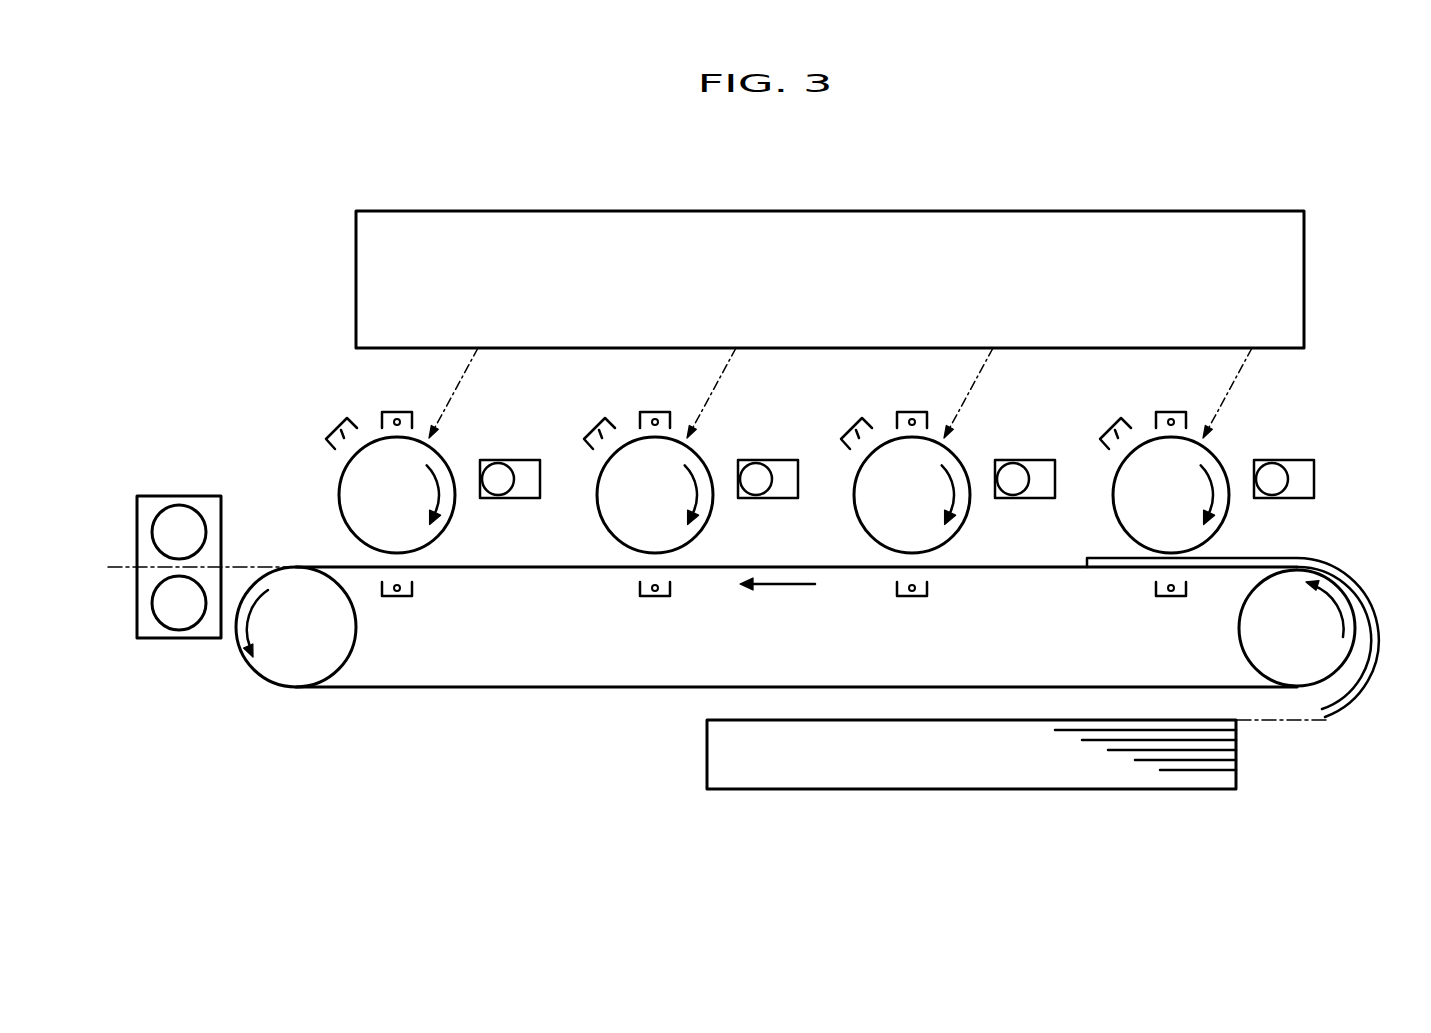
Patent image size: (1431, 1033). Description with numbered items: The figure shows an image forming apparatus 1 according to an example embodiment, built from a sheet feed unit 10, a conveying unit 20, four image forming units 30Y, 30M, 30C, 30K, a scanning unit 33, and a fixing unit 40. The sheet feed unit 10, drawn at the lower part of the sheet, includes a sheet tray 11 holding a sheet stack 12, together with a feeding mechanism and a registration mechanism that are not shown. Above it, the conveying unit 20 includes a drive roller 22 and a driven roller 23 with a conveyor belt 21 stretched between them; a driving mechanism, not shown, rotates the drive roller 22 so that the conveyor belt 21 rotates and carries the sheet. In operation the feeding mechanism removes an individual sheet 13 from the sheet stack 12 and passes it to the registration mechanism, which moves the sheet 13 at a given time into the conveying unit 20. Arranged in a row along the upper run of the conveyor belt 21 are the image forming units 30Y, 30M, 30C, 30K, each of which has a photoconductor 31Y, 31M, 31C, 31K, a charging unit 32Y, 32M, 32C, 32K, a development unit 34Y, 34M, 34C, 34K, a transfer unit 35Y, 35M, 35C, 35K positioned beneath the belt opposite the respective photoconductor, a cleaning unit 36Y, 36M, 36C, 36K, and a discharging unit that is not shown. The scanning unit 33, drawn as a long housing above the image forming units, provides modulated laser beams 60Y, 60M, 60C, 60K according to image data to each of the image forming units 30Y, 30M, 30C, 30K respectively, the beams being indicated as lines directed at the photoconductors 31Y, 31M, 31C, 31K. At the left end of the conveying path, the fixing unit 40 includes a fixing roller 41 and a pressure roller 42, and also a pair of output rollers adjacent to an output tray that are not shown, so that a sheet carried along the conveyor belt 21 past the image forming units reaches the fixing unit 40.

The image forming apparatus 1 is at (1117, 163).
The sheet feed unit 10 is at (931, 785).
The sheet tray 11 is at (907, 792).
The sheet stack 12 is at (1190, 772).
The sheet 13 is at (1378, 607).
The conveying unit 20 is at (779, 661).
The conveyor belt 21 is at (540, 690).
The drive roller 22 is at (1250, 650).
The driven roller 23 is at (262, 670).
The scanning unit 33 is at (975, 211).
The fixing unit 40 is at (160, 532).
The fixing roller 41 is at (152, 540).
The pressure roller 42 is at (152, 610).
The image forming unit 30K is at (391, 475).
The image forming unit 30C is at (648, 475).
The image forming unit 30M is at (905, 475).
The image forming unit 30Y is at (1165, 475).
The photoconductor 31K is at (337, 506).
The photoconductor 31C is at (595, 506).
The photoconductor 31M is at (852, 506).
The photoconductor 31Y is at (1111, 506).
The charging unit 32K is at (397, 412).
The charging unit 32C is at (655, 412).
The charging unit 32M is at (912, 412).
The charging unit 32Y is at (1171, 412).
The development unit 34K is at (497, 500).
The development unit 34C is at (755, 500).
The development unit 34M is at (1012, 500).
The development unit 34Y is at (1271, 500).
The transfer unit 35K is at (397, 598).
The transfer unit 35C is at (655, 598).
The transfer unit 35M is at (912, 598).
The transfer unit 35Y is at (1171, 598).
The cleaning unit 36K is at (338, 428).
The cleaning unit 36C is at (596, 428).
The cleaning unit 36M is at (853, 428).
The cleaning unit 36Y is at (1112, 428).
The laser beam 60K is at (465, 374).
The laser beam 60C is at (723, 374).
The laser beam 60M is at (980, 374).
The laser beam 60Y is at (1239, 374).